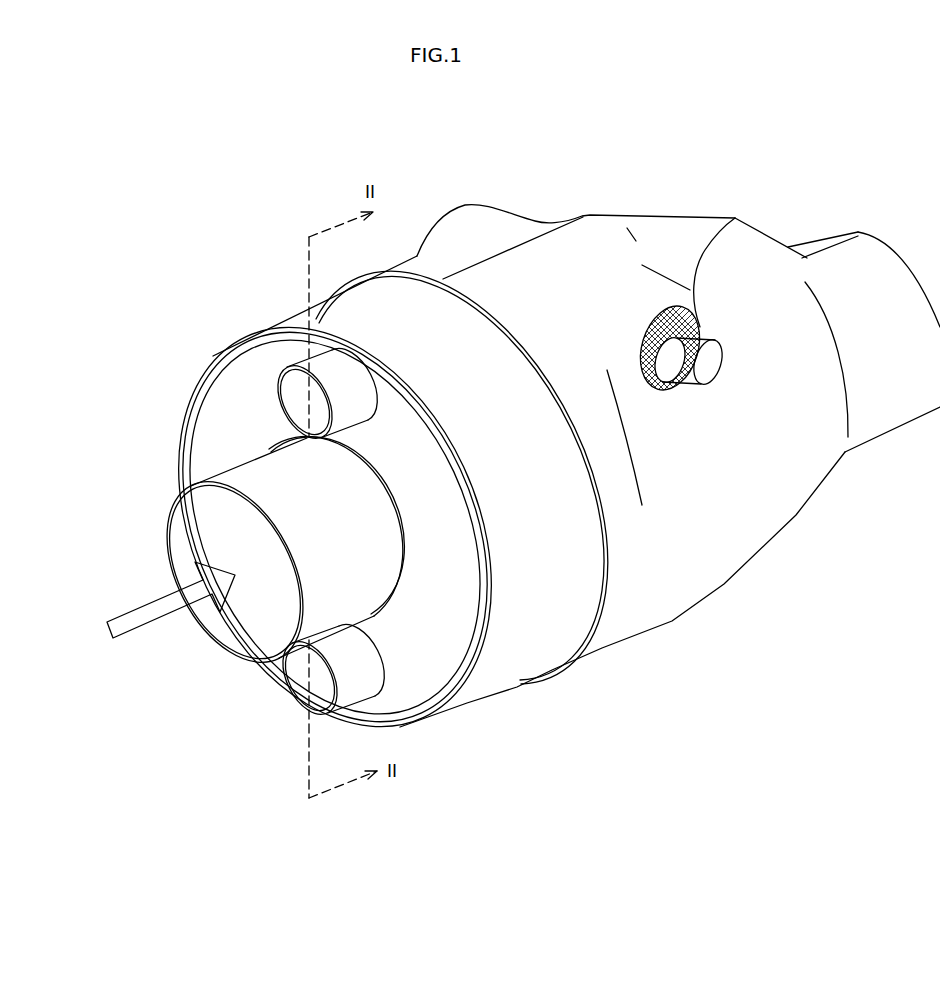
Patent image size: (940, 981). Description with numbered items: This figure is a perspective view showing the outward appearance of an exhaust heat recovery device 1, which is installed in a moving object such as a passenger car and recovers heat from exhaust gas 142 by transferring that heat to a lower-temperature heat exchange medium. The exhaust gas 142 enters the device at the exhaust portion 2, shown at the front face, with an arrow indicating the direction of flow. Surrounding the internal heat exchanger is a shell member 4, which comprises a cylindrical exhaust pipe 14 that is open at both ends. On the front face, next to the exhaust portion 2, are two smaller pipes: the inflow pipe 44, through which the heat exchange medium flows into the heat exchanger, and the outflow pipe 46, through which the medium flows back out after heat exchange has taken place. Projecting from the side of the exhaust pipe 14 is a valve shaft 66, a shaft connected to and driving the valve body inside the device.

The exhaust heat recovery device 1 is at (594, 154).
The exhaust portion 2 is at (255, 483).
The shell member 4 is at (299, 323).
The exhaust pipe 14 is at (675, 238).
The inflow pipe 44 is at (297, 688).
The outflow pipe 46 is at (282, 380).
The valve shaft 66 is at (693, 300).
The exhaust gas 142 is at (143, 606).